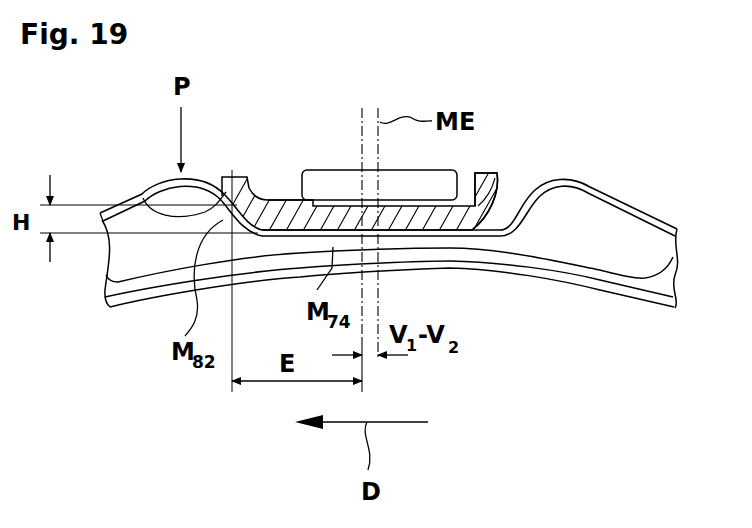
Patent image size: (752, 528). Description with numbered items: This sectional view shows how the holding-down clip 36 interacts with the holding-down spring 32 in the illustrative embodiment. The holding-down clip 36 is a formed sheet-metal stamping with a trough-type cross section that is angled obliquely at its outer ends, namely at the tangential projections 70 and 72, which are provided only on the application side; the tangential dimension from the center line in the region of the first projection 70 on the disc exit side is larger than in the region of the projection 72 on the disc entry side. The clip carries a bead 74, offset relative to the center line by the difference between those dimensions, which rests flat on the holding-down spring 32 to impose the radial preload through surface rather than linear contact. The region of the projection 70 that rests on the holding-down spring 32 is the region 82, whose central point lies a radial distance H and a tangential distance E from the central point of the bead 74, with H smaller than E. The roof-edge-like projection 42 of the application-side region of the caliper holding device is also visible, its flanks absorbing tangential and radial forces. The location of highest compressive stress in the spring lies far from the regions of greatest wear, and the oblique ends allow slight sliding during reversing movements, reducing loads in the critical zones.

The region of the projection resting on the holding-down spring 82 is at (147, 193).
The tangential projection 70 is at (238, 188).
The holding-down clip 36 is at (272, 146).
The projection 42 is at (335, 170).
The tangential projection 72 is at (492, 177).
The holding-down spring 32 is at (562, 180).
The bead 74 is at (398, 230).